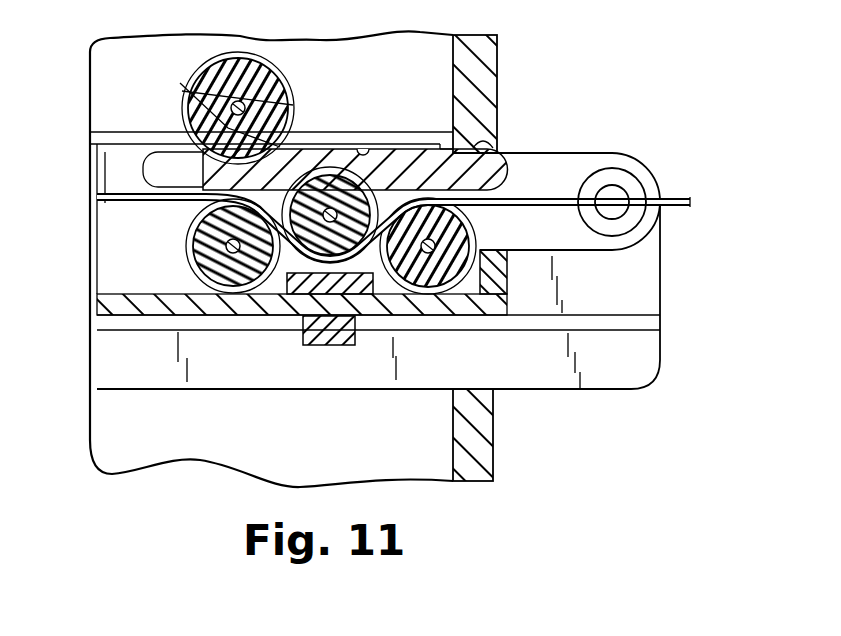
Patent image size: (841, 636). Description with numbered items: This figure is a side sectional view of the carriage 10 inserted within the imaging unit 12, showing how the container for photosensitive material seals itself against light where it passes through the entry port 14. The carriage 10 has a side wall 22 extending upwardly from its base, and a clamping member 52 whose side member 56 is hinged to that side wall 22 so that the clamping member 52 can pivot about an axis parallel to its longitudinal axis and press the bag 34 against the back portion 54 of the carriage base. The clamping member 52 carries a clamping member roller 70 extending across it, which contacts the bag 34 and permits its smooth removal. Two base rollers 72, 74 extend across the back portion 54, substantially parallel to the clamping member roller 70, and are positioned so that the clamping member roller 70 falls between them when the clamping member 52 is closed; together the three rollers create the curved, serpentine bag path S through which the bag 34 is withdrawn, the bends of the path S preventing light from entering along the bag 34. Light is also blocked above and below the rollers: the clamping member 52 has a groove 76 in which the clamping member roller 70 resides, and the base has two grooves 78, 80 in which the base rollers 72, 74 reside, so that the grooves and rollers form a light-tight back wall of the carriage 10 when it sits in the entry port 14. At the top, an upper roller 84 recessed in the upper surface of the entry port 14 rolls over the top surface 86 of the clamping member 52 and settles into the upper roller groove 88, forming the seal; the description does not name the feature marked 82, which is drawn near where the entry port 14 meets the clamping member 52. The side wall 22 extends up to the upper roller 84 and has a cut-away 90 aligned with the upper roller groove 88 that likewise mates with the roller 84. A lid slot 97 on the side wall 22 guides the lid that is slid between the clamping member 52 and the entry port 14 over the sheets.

The carriage 10 is at (669, 265).
The imaging unit 12 is at (432, 494).
The entry port 14 is at (498, 148).
The side wall 22 is at (122, 133).
The bag 34 is at (527, 208).
The clamping member 52 is at (652, 160).
The back portion 54 is at (406, 293).
The side member 56 is at (562, 165).
The clamping member roller 70 is at (267, 295).
The base roller 72 is at (447, 280).
The base roller 74 is at (183, 241).
The groove 76 is at (402, 152).
The groove 78 is at (427, 283).
The groove 80 is at (193, 261).
The notch 82 is at (482, 149).
The upper roller 84 is at (258, 74).
The top surface 86 is at (333, 149).
The upper roller groove 88 is at (214, 101).
The cut-away 90 is at (293, 104).
The lid slot 97 is at (378, 148).
The bag path S is at (385, 292).